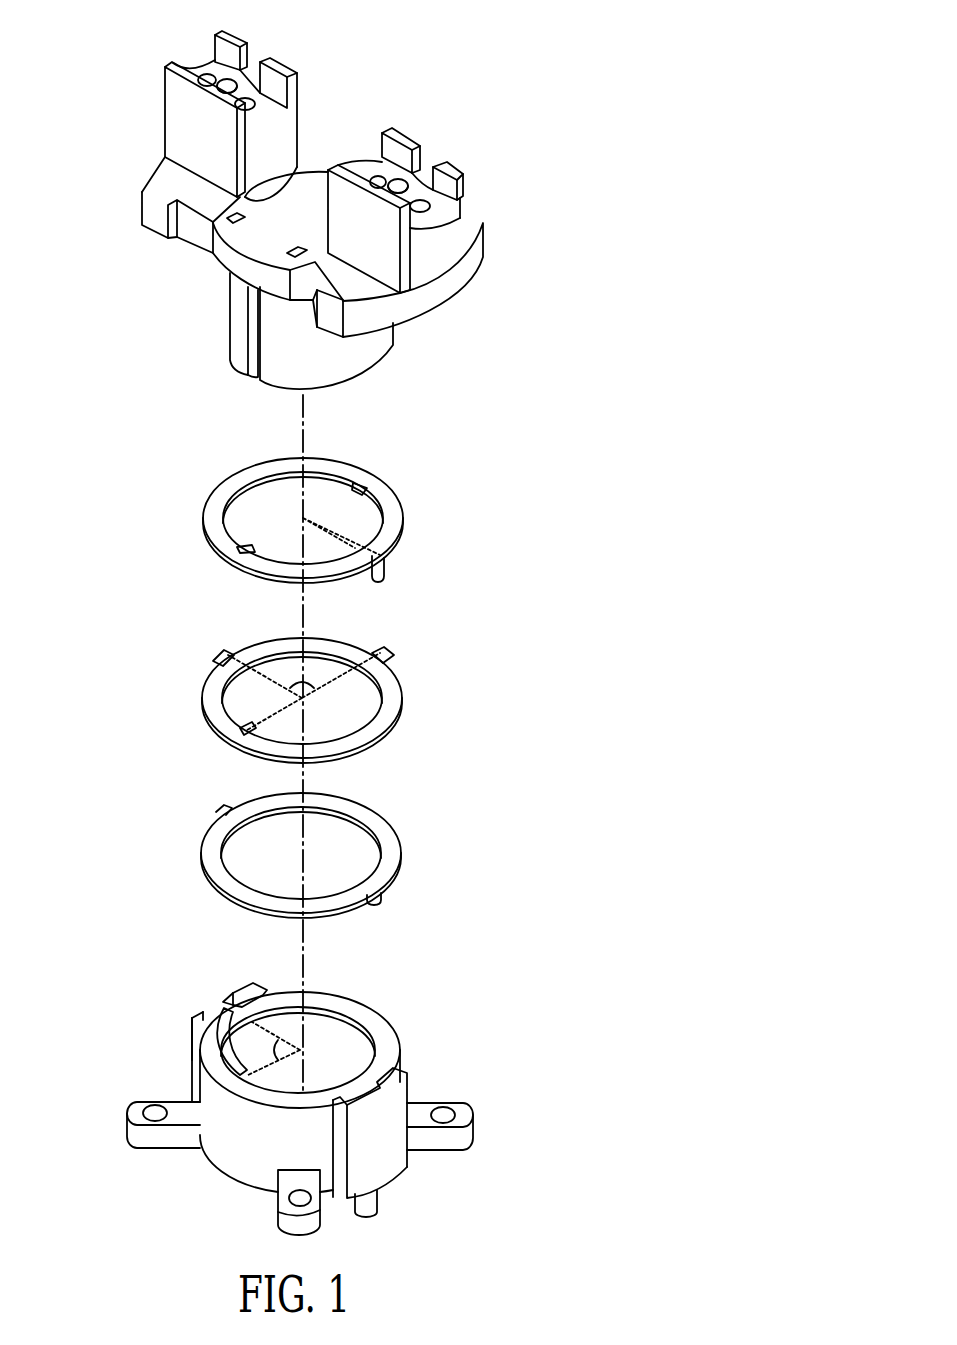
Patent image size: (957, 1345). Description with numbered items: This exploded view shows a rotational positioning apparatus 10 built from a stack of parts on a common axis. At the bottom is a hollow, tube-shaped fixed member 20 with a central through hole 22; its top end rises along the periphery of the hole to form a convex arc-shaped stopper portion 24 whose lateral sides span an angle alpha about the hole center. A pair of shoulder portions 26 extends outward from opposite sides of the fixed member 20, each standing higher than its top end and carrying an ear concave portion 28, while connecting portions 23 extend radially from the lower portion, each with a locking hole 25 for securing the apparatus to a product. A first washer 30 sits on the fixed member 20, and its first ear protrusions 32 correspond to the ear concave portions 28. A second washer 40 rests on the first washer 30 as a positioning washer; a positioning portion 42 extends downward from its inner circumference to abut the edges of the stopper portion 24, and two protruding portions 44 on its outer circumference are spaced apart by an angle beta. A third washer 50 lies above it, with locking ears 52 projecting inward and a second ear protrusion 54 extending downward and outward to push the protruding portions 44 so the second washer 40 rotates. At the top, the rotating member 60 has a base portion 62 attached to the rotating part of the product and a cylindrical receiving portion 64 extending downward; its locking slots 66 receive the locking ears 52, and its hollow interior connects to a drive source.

The rotational positioning apparatus 10 is at (569, 26).
The fixed member 20 is at (450, 1170).
The through hole 22 is at (342, 1040).
The connecting portions 23 is at (172, 1137).
The stopper portion 24 is at (225, 1055).
The locking hole 25 is at (153, 1112).
The shoulder portions 26 is at (197, 1012).
The ear concave portion 28 is at (232, 997).
The first washer 30 is at (370, 800).
The first ear protrusions 32 is at (380, 895).
The second washer 40 is at (392, 647).
The positioning portion 42 is at (243, 728).
The protruding portions 44 is at (222, 653).
The third washer 50 is at (412, 482).
The locking ears 52 is at (360, 485).
The second ear protrusion 54 is at (385, 567).
The rotating member 60 is at (450, 145).
The base portion 62 is at (167, 180).
The receiving portion 64 is at (373, 350).
The locking slots 66 is at (257, 340).